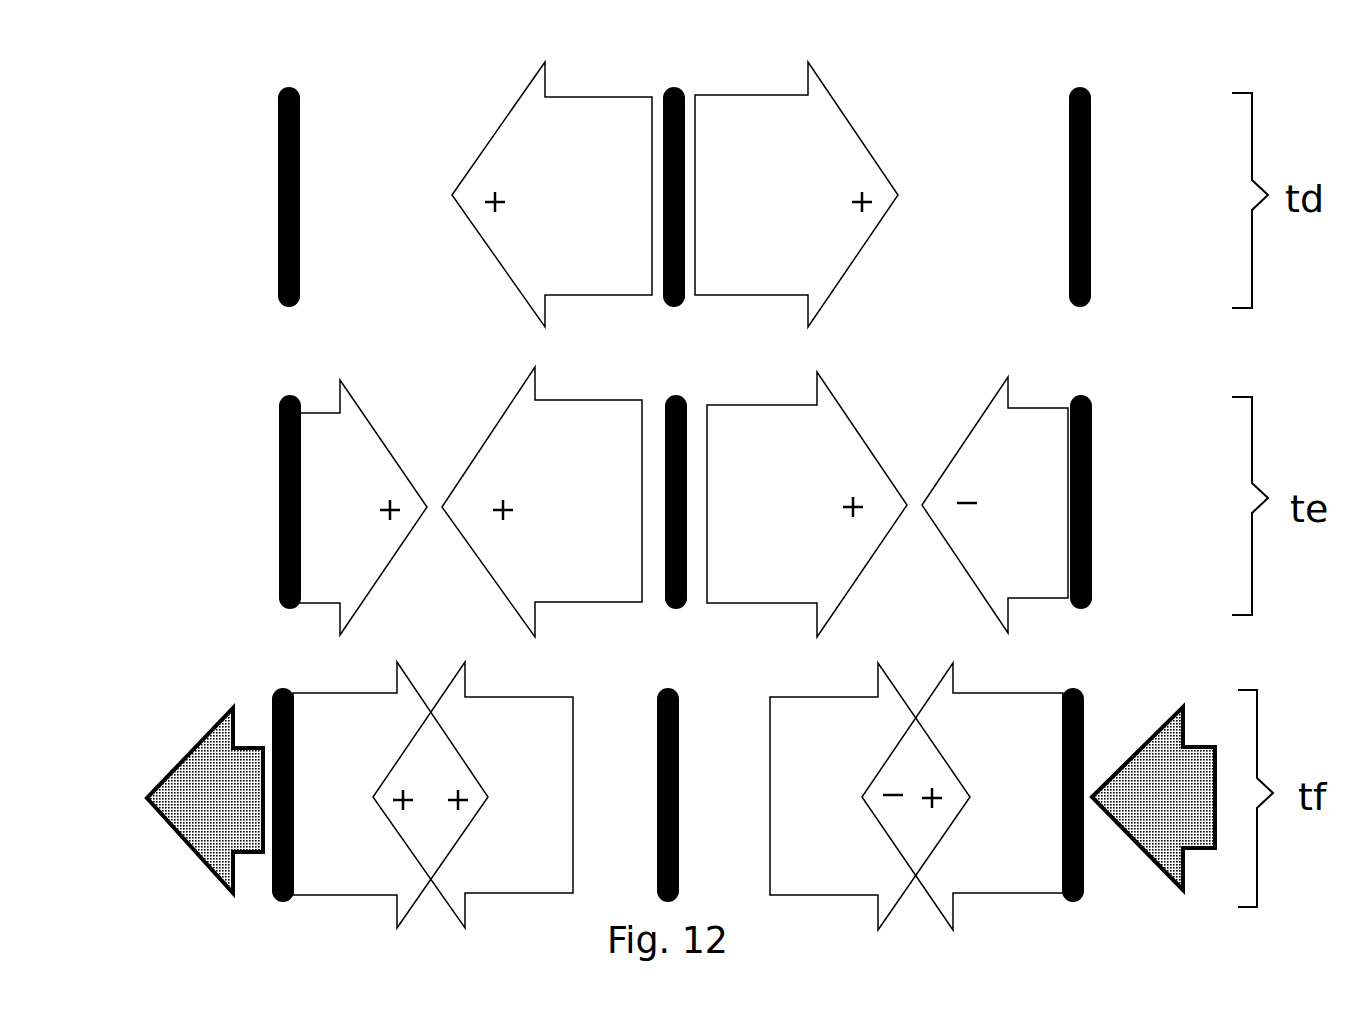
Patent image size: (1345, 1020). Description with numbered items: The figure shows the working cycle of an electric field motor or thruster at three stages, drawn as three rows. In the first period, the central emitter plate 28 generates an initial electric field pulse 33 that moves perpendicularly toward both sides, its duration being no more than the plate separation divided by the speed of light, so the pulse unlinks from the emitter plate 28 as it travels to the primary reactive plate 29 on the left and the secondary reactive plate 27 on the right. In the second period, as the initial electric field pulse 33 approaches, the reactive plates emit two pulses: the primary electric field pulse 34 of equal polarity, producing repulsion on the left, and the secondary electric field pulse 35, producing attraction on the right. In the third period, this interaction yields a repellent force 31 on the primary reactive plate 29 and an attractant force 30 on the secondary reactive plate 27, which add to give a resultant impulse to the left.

The secondary reactive plate 27 is at (1112, 479).
The emitter plate 28 is at (671, 464).
The primary reactive plate 29 is at (264, 494).
The attractant force 30 is at (1153, 798).
The repellent force 31 is at (205, 800).
The initial electric field pulse 33 is at (671, 496).
The primary electric field pulse 34 is at (390, 654).
The secondary electric field pulse 35 is at (965, 653).